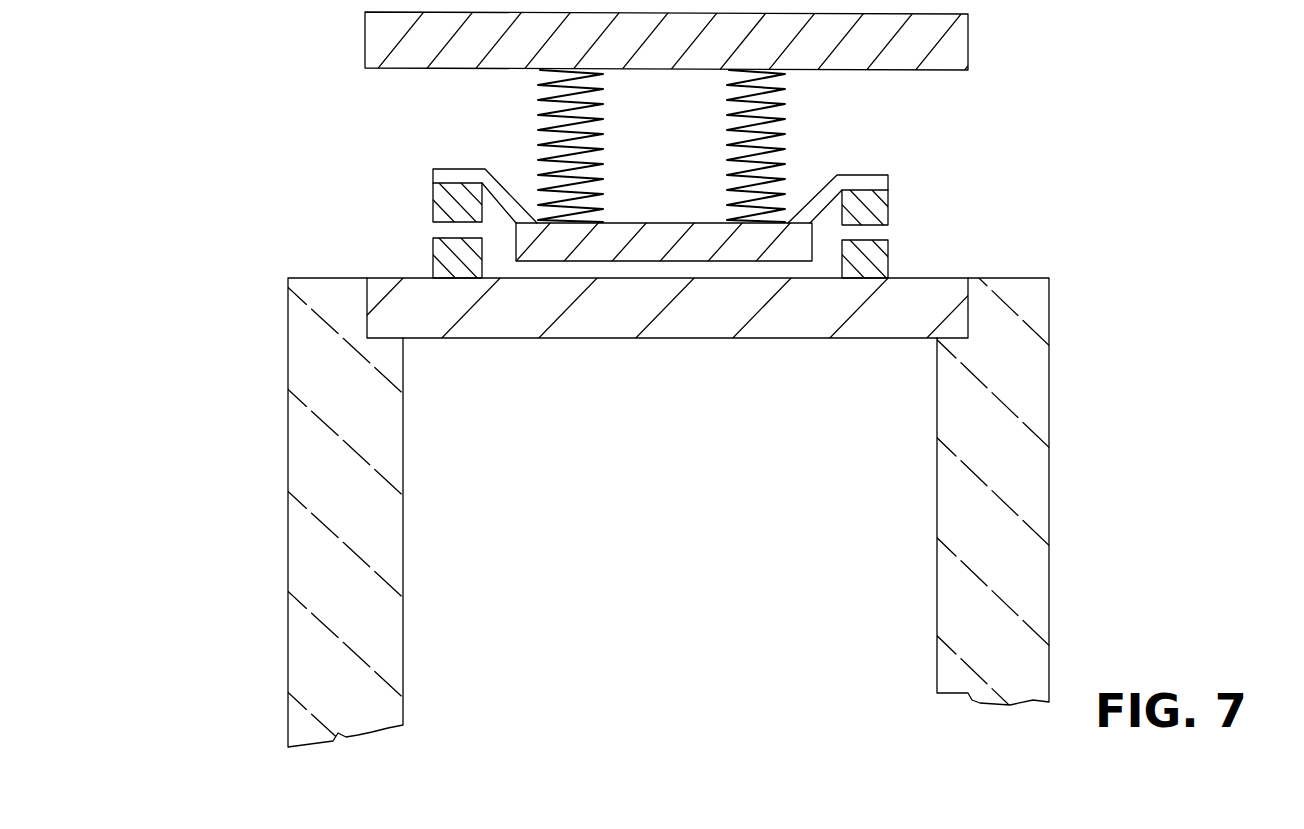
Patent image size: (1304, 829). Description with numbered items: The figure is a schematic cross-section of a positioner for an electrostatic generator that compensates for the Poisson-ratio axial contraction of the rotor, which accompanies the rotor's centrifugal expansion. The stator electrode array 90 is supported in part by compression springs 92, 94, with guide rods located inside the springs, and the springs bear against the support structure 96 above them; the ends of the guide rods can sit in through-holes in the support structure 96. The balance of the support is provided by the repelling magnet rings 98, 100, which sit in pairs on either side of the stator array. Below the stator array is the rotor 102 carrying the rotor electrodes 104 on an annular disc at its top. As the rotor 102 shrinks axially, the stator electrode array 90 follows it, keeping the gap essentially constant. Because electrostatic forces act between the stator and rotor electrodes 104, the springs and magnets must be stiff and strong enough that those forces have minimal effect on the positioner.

The stator electrode array 90 is at (661, 218).
The compression spring 92 is at (537, 146).
The compression spring 94 is at (791, 146).
The support structure 96 is at (704, 40).
The repelling magnet ring 98 is at (639, 198).
The repelling magnet ring 100 is at (628, 248).
The rotor 102 is at (637, 518).
The rotor electrodes 104 is at (665, 336).